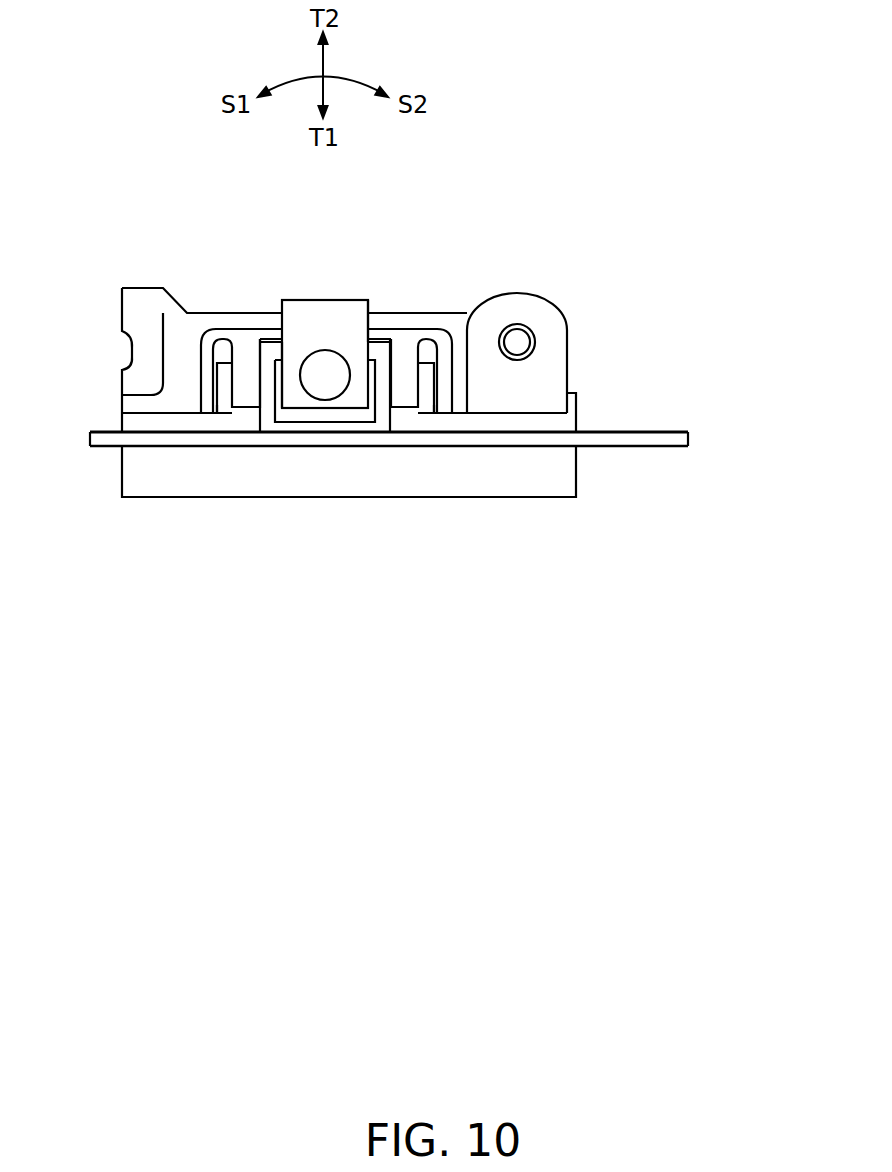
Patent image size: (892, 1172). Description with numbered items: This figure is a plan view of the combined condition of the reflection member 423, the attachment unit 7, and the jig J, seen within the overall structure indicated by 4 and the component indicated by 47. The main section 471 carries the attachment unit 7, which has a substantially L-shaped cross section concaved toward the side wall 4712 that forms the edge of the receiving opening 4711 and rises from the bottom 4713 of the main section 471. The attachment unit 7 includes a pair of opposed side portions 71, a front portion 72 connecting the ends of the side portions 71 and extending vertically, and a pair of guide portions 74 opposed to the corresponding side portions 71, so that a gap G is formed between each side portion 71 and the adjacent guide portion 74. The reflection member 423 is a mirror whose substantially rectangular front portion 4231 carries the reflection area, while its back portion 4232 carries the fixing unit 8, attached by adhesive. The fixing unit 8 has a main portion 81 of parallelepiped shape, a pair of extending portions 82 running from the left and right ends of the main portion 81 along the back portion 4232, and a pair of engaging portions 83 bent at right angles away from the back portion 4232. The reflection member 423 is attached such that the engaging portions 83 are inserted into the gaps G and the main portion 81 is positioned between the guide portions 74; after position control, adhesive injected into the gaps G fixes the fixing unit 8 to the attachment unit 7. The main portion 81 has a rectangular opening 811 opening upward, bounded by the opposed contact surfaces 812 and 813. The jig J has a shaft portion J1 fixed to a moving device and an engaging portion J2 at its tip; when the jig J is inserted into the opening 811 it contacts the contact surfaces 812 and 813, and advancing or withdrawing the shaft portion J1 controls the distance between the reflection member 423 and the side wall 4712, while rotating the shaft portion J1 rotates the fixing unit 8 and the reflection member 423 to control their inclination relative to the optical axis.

The optical scanner / actuator assembly 4 is at (650, 199).
The attachment unit 7 is at (222, 278).
The side portions 71 is at (215, 400).
The front portion 72 is at (278, 340).
The guide portions 74 is at (248, 390).
The fixing unit 8 is at (430, 405).
The main portion 81 is at (360, 423).
The opening 811 is at (305, 421).
The contact surface 812 is at (333, 412).
The contact surface 813 is at (388, 328).
The extending portions 82 is at (238, 423).
The engaging portions 83 is at (215, 405).
The reflection member 423 is at (690, 437).
The front portion 4231 is at (667, 447).
The back portion 4232 is at (663, 432).
The support portion 47 is at (577, 481).
The main section 471 is at (337, 407).
The receiving opening 4711 is at (465, 323).
The side wall 4712 is at (518, 413).
The bottom 4713 is at (137, 490).
The gap G is at (220, 340).
The jig J is at (290, 230).
The shaft portion J1 is at (338, 368).
The engaging portion J2 is at (302, 312).